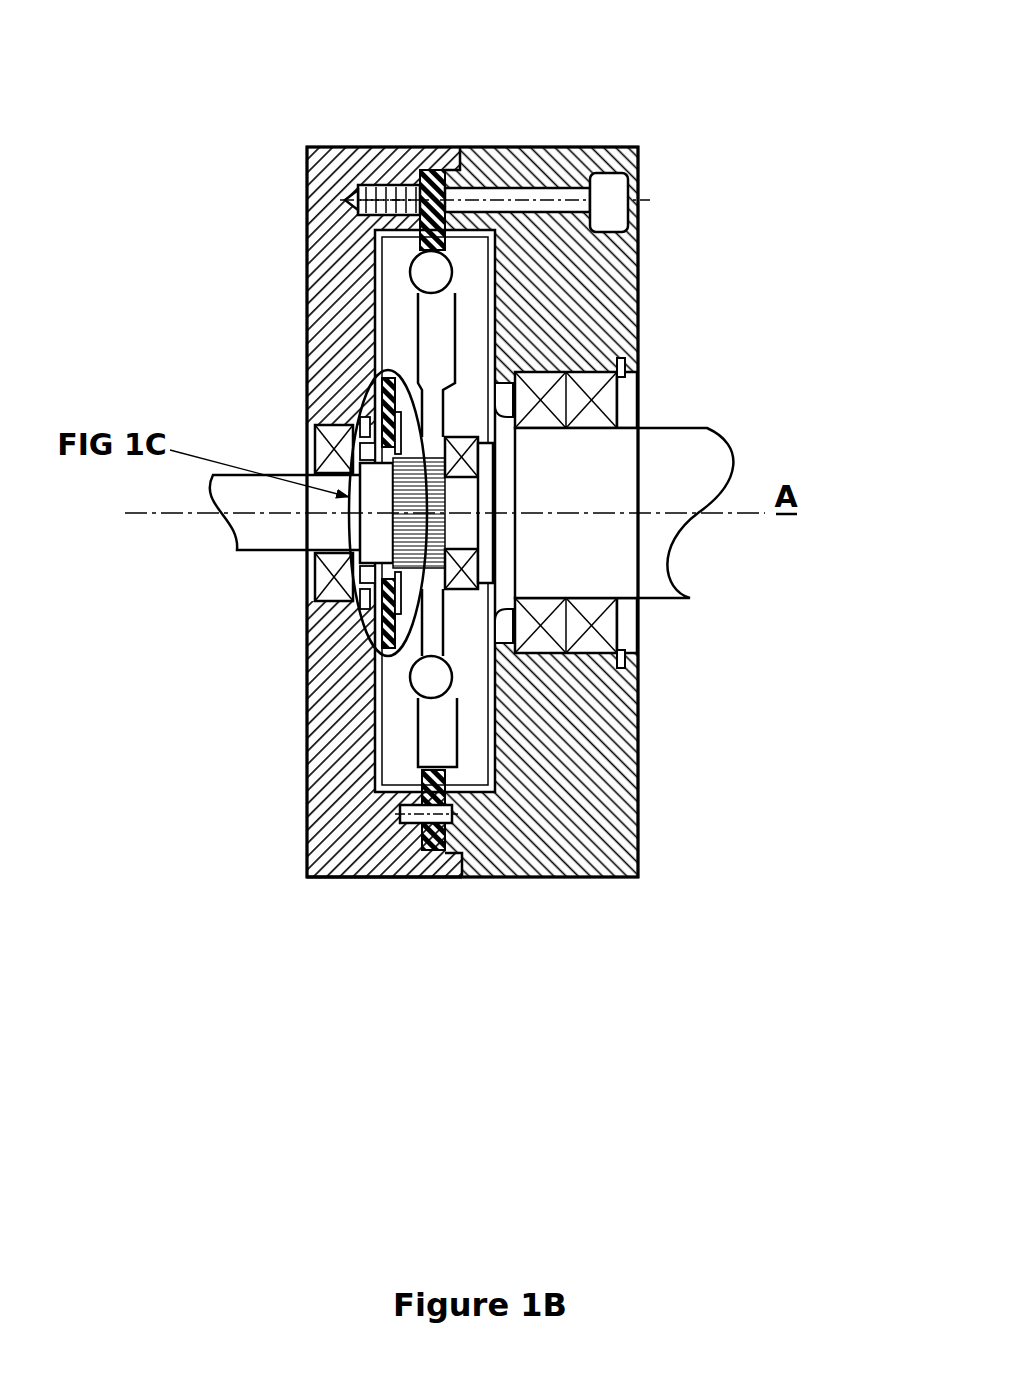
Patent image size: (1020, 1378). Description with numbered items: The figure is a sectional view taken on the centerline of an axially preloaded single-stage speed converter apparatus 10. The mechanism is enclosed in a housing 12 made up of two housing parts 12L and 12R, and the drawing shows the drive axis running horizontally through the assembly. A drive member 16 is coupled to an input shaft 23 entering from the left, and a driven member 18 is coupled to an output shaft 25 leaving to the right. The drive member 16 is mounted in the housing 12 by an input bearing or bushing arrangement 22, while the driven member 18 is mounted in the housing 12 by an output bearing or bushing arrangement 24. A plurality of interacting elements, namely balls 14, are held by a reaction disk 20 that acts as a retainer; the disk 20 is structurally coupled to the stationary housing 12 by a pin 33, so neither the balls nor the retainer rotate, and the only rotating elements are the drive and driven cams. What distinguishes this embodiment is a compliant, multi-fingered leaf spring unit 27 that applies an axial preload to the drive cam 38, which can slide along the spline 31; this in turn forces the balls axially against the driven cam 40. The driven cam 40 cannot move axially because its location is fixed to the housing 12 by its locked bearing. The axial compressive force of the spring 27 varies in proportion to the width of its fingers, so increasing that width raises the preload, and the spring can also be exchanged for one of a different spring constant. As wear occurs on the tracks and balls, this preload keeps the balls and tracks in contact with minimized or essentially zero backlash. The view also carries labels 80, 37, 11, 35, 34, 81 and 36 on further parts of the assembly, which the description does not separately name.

The speed converter apparatus 10 is at (382, 118).
The housing 12 is at (575, 118).
The housing part 12L is at (302, 258).
The housing part 12R is at (641, 853).
The reaction disk 20 is at (412, 166).
The bolt head 80 is at (622, 137).
The drive cam 38 is at (406, 260).
The driven cam 40 is at (470, 335).
The plunger 37 is at (557, 369).
The multi-fingered leaf spring unit 27 is at (374, 383).
The output bearing or bushing arrangement 24 is at (621, 390).
The bearing spacer 11 is at (642, 403).
The input bearing or bushing arrangement 22 is at (311, 437).
The inner bearing 35 is at (491, 551).
The input shaft 23 is at (269, 554).
The output shaft 25 is at (710, 597).
The spline 31 is at (403, 575).
The hub 34 is at (403, 656).
The balls 14 is at (404, 689).
The drive member 16 is at (404, 754).
The pin 33 is at (341, 871).
The locating pin 81 is at (624, 664).
The driven member 18 is at (472, 651).
The lower bolt 36 is at (464, 752).